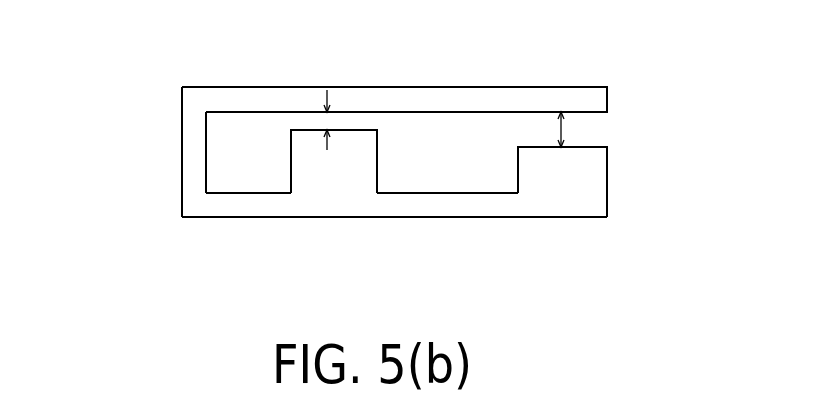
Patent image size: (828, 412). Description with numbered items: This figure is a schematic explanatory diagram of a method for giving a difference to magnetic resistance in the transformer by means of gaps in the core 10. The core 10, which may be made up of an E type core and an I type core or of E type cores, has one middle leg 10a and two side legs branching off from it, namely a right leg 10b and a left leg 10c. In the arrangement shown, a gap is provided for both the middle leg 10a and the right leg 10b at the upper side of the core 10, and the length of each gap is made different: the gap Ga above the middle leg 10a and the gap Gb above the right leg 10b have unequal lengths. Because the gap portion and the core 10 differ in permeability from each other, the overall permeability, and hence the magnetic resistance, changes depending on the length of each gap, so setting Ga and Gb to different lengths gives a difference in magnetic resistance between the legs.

The core 10 is at (337, 182).
The middle leg 10a is at (339, 182).
The right leg 10b is at (561, 192).
The left leg 10c is at (190, 175).
The gap between first protrusion and upper plate Ga is at (327, 120).
The gap between second protrusion and upper plate Gb is at (563, 130).